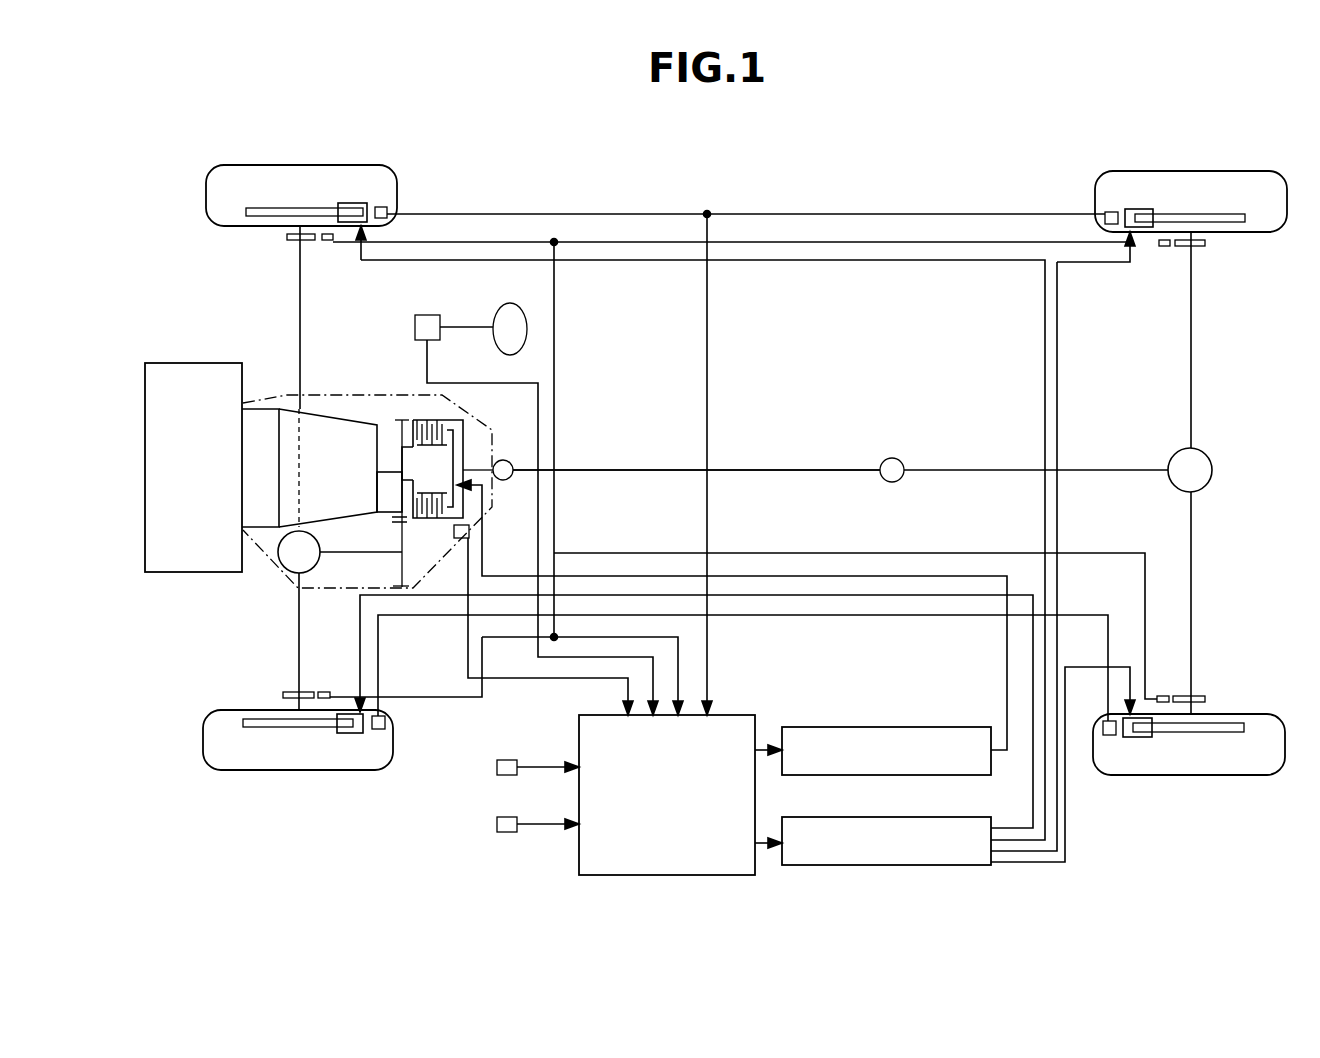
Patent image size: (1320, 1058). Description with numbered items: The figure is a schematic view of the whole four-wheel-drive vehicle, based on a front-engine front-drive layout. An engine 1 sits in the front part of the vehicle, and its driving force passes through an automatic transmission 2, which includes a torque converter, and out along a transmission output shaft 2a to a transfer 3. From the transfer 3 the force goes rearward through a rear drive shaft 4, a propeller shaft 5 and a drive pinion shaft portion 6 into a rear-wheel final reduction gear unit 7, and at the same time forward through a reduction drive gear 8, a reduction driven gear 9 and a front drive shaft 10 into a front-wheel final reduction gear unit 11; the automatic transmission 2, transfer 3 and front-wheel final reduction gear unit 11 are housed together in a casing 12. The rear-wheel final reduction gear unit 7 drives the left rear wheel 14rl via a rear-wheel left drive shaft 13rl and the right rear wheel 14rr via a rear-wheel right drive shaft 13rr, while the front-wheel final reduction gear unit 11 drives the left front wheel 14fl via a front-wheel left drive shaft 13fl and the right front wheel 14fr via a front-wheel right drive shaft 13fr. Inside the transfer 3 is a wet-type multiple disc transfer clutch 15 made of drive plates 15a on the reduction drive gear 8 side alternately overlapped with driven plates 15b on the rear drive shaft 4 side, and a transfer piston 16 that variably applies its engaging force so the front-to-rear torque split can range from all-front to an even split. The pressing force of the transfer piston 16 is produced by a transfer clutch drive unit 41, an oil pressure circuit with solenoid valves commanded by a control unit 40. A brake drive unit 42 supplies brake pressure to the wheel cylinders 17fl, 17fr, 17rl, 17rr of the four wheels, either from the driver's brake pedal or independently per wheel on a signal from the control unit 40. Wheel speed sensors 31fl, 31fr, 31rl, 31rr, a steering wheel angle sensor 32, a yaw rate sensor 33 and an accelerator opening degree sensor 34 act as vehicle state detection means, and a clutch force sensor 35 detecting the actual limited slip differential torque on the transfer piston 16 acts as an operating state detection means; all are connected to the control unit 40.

The engine 1 is at (145, 460).
The automatic transmission 2 is at (293, 410).
The transmission output shaft 2a is at (388, 470).
The transfer 3 is at (469, 466).
The rear drive shaft 4 is at (475, 468).
The propeller shaft 5 is at (752, 470).
The drive pinion shaft portion 6 is at (956, 470).
The rear-wheel final reduction gear unit 7 is at (1212, 463).
The reduction drive gear 8 is at (399, 420).
The reduction driven gear 9 is at (392, 520).
The front drive shaft 10 is at (348, 555).
The front-wheel final reduction gear unit 11 is at (305, 574).
The casing 12 is at (320, 395).
The front-wheel right drive shaft 13fr is at (300, 297).
The front-wheel left drive shaft 13fl is at (299, 673).
The rear-wheel right drive shaft 13rr is at (1191, 288).
The rear-wheel left drive shaft 13rl is at (1191, 636).
The right front wheel 14fr is at (206, 192).
The left front wheel 14fl is at (203, 735).
The right rear wheel 14rr is at (1250, 171).
The left rear wheel 14rl is at (1250, 775).
The transfer clutch 15 is at (471, 425).
The drive plate 15a is at (428, 420).
The driven plate 15b is at (432, 420).
The transfer piston 16 is at (464, 440).
The right-front-wheel wheel cylinder 17fr is at (349, 203).
The left-front-wheel wheel cylinder 17fl is at (355, 733).
The right-rear-wheel wheel cylinder 17rr is at (1137, 209).
The left-rear-wheel wheel cylinder 17rl is at (1140, 738).
The wheel speed sensor 31fr is at (328, 241).
The wheel speed sensor 31fl is at (325, 692).
The wheel speed sensor 31rr is at (1164, 247).
The wheel speed sensor 31rl is at (1163, 696).
The steering wheel angle sensor 32 is at (428, 315).
The yaw rate sensor 33 is at (497, 767).
The accelerator opening degree sensor 34 is at (497, 824).
The clutch force sensor 35 is at (469, 530).
The control unit 40 is at (738, 715).
The transfer clutch drive unit 41 is at (930, 727).
The brake drive unit 42 is at (930, 817).